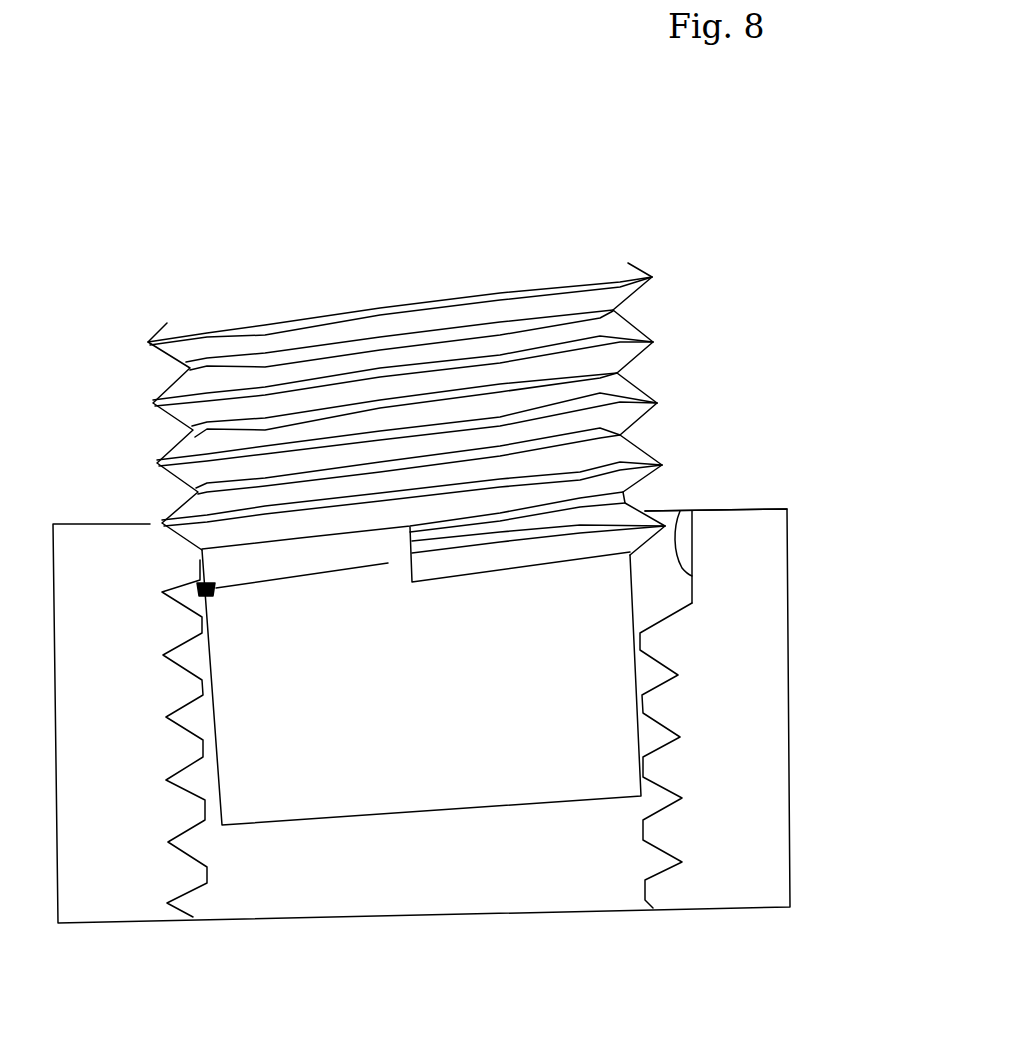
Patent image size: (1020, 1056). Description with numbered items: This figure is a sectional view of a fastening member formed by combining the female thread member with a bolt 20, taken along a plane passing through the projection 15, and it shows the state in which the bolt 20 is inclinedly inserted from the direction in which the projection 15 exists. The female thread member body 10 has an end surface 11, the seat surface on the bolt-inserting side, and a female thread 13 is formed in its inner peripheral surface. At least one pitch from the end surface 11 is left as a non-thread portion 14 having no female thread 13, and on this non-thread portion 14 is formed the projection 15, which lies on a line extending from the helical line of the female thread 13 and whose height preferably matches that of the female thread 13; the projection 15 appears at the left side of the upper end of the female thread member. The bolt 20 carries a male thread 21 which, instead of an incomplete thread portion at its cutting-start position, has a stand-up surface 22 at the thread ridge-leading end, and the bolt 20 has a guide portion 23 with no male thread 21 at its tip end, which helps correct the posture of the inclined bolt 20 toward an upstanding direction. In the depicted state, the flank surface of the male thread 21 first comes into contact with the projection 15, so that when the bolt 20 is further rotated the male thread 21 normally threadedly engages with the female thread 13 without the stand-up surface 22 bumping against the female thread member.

The female thread member body 10 is at (752, 680).
The end surface 11 is at (738, 509).
The female thread 13 is at (190, 685).
The non-thread portion 14 is at (680, 511).
The projection 15 is at (194, 568).
The bolt 20 is at (442, 377).
The male thread 21 is at (638, 452).
The stand-up surface 22 is at (408, 570).
The guide portion 23 is at (421, 770).